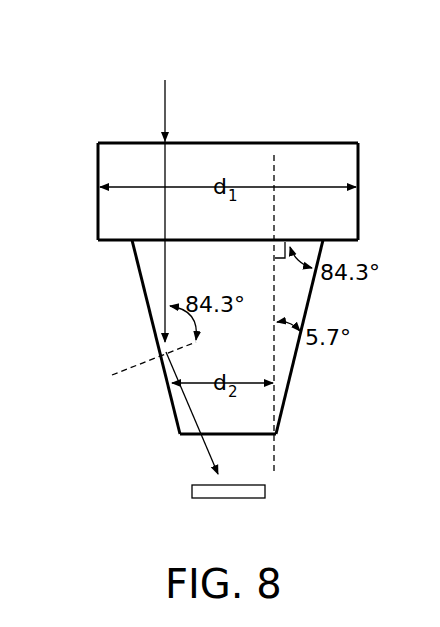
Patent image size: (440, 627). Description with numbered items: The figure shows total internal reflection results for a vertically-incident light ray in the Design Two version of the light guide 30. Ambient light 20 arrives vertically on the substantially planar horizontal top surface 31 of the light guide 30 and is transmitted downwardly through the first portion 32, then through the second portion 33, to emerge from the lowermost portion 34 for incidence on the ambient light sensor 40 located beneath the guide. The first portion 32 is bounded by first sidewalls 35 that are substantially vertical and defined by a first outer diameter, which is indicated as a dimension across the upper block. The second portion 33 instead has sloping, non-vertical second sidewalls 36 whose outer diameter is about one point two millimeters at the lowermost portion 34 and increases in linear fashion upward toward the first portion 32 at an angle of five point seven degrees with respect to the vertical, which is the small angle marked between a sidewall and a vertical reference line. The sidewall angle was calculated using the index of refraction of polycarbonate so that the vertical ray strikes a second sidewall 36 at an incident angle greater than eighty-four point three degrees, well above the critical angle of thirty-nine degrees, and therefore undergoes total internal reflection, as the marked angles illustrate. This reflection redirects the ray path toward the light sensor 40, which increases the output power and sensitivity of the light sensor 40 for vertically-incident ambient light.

The ambient light 20 is at (185, 265).
The light guide 30 is at (231, 251).
The top surface 31 is at (283, 142).
The first portion 32 is at (120, 213).
The second portion 33 is at (150, 262).
The lowermost portion 34 is at (195, 435).
The first sidewalls 35 is at (98, 165).
The second sidewalls 36 is at (150, 312).
The ambient light sensor 40 is at (265, 492).